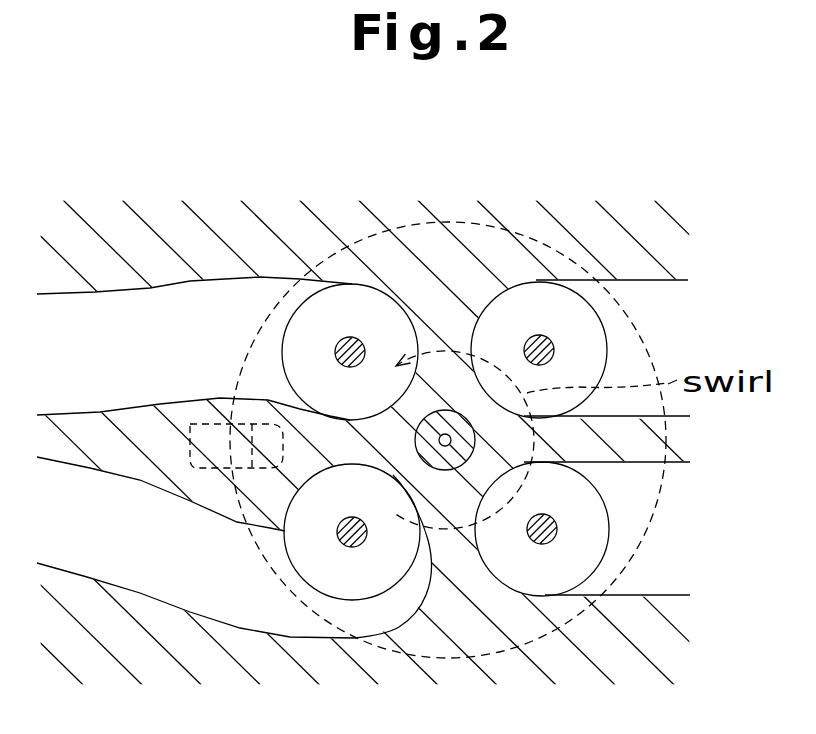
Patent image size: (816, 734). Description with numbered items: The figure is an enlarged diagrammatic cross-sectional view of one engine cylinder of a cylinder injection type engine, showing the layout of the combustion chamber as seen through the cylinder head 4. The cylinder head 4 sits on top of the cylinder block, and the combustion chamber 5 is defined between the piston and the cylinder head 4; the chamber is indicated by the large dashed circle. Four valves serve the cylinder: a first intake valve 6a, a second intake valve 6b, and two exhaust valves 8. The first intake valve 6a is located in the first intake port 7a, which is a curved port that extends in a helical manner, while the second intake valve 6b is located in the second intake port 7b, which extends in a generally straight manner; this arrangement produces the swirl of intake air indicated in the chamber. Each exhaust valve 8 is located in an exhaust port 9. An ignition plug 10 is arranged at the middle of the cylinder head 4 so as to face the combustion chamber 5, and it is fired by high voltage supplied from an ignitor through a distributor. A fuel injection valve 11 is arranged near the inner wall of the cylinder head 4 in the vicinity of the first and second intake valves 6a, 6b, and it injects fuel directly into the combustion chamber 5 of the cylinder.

The cylinder head 4 is at (639, 222).
The combustion chamber 5 is at (446, 222).
The first intake valve 6a is at (365, 577).
The second intake valve 6b is at (372, 303).
The first intake port 7a is at (200, 598).
The second intake port 7b is at (172, 304).
The exhaust valve 8 is at (528, 298).
The exhaust port 9 is at (648, 290).
The ignition plug 10 is at (460, 414).
The fuel injection valve 11 is at (193, 424).